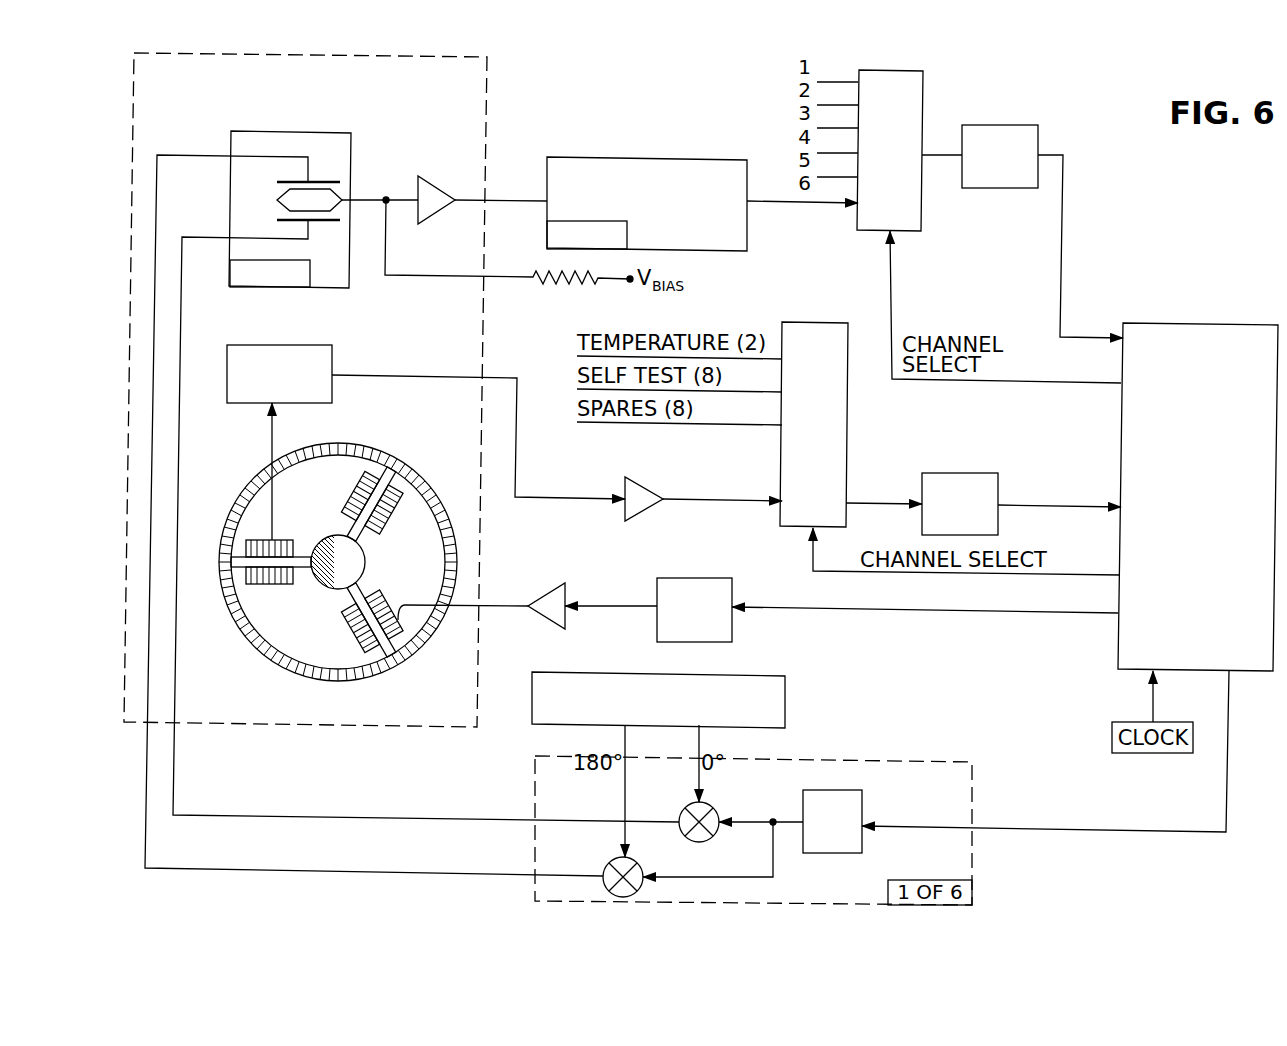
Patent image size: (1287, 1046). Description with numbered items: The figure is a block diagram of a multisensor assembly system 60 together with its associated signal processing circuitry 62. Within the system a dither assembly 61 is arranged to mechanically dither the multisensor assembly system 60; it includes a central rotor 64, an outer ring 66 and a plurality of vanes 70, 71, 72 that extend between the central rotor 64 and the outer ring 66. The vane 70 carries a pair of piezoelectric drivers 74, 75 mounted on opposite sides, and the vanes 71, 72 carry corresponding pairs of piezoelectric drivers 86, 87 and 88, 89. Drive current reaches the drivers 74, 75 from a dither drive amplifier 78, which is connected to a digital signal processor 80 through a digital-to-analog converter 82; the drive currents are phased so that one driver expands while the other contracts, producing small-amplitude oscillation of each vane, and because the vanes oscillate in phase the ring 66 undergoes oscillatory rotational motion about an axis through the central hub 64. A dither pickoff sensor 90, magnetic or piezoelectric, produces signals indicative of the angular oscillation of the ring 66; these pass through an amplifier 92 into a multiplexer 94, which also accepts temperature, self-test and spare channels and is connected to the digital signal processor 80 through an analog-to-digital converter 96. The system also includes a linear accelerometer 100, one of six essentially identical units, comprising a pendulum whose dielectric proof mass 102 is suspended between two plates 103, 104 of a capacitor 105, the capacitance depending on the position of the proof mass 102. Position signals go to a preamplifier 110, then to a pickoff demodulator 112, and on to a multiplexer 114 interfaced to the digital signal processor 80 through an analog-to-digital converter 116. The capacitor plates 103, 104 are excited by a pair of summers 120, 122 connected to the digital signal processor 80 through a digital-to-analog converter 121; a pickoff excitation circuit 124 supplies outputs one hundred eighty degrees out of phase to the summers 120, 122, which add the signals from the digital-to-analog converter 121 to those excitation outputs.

The multisensor assembly system 60 is at (487, 112).
The dither assembly 61 is at (365, 685).
The signal processing circuitry 62 is at (1160, 250).
The central rotor 64 is at (330, 540).
The outer ring 66 is at (383, 450).
The vane 70 is at (345, 607).
The vane 71 is at (367, 543).
The vane 72 is at (300, 578).
The piezoelectric driver 74 is at (340, 670).
The piezoelectric driver 75 is at (433, 623).
The dither drive amplifier 78 is at (565, 622).
The digital signal processor 80 is at (1118, 650).
The digital-to-analog converter 82 is at (732, 628).
The piezoelectric driver 86 is at (400, 505).
The piezoelectric driver 87 is at (365, 488).
The piezoelectric driver 88 is at (255, 540).
The piezoelectric driver 89 is at (250, 580).
The dither pickoff sensor 90 is at (282, 345).
The amplifier 92 is at (645, 490).
The multiplexer 94 is at (848, 408).
The analog-to-digital converter 96 is at (998, 492).
The linear accelerometer 100 is at (330, 132).
The proof mass 102 is at (340, 190).
The plate 103 is at (290, 181).
The plate 104 is at (290, 222).
The capacitor 105 is at (333, 236).
The preamplifier 110 is at (440, 182).
The pickoff demodulator 112 is at (672, 158).
The multiplexer 114 is at (923, 92).
The analog-to-digital converter 116 is at (1038, 140).
The summer 120 is at (608, 864).
The digital-to-analog converter 121 is at (862, 810).
The summer 122 is at (717, 808).
The pickoff excitation circuit 124 is at (785, 700).